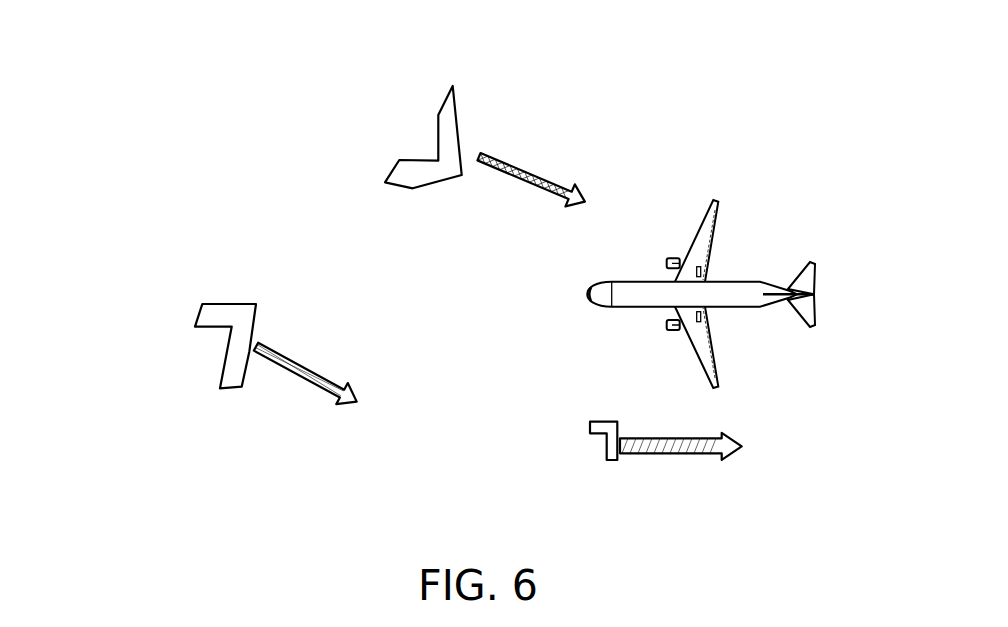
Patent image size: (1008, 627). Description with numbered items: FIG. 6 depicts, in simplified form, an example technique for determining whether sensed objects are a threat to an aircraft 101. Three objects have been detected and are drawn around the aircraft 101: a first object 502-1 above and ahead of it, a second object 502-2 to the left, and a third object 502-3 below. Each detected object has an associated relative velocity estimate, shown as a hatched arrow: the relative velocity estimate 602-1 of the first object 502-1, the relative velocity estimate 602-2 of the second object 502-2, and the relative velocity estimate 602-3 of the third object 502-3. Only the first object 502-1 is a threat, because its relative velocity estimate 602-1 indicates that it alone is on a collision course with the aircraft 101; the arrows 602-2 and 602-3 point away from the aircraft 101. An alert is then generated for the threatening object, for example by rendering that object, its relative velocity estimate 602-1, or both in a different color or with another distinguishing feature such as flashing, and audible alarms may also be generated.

The aircraft 101 is at (763, 253).
The first component piece 502-1 is at (432, 100).
The second component piece 502-2 is at (212, 345).
The third component piece 502-3 is at (587, 433).
The relative velocity estimate 602-1 is at (525, 177).
The relative velocity estimate 602-2 is at (323, 335).
The relative velocity estimate 602-3 is at (668, 453).